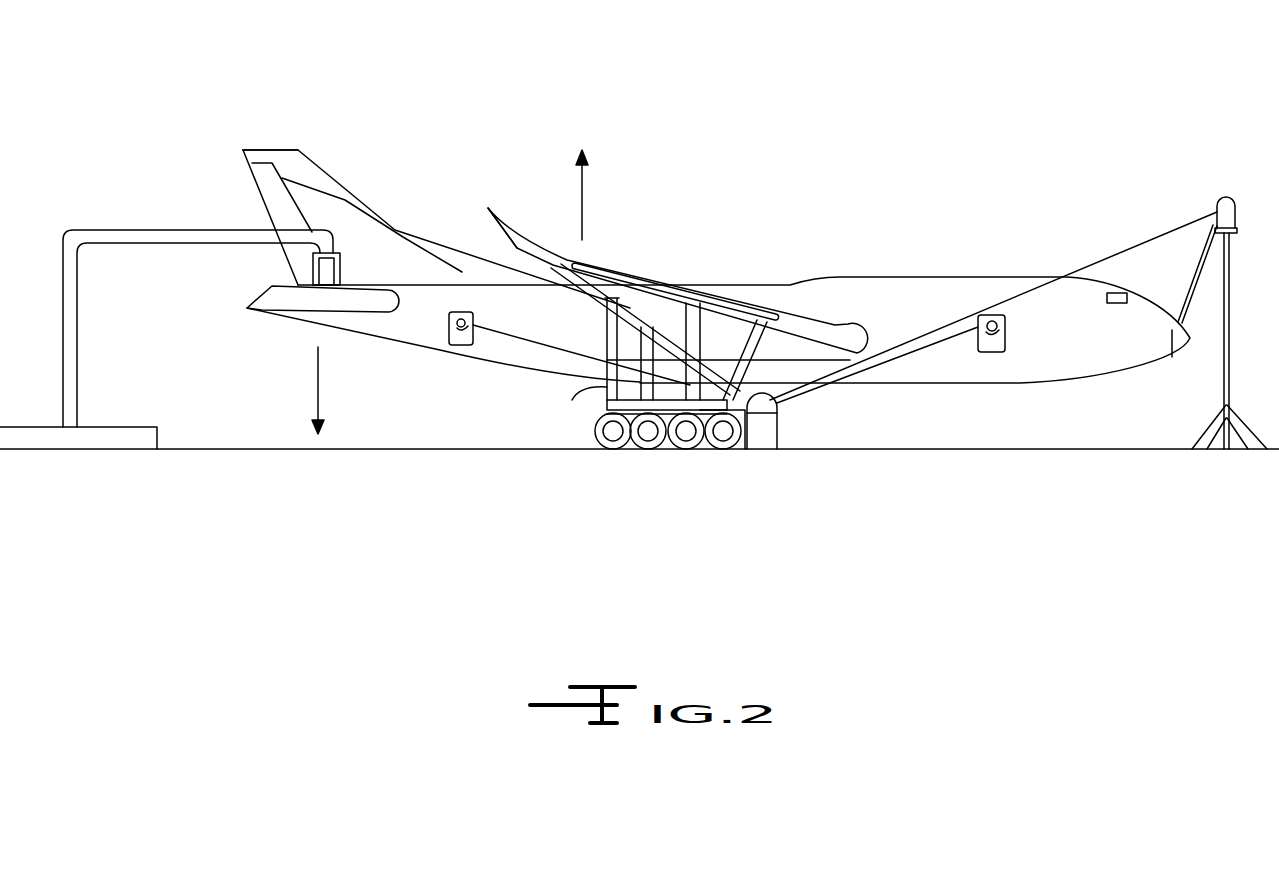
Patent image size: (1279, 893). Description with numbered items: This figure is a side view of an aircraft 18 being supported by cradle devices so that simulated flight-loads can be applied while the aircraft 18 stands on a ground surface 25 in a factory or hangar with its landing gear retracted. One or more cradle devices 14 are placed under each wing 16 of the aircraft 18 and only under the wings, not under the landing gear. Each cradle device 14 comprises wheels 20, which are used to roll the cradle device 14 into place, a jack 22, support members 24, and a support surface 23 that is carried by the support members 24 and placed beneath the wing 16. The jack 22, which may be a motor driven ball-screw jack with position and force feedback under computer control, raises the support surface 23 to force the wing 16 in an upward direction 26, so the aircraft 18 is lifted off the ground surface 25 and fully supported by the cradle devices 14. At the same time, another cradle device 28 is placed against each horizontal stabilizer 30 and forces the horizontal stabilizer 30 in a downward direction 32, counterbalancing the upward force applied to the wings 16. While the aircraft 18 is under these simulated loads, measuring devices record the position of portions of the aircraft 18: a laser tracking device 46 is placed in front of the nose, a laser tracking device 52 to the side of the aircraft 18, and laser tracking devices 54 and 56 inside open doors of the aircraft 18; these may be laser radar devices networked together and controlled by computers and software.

The cradle device 14 is at (712, 442).
The wing 16 is at (668, 287).
The aircraft 18 is at (867, 277).
The wheels 20 is at (650, 442).
The jack 22 is at (573, 400).
The support surface 23 is at (300, 300).
The support members 24 is at (775, 335).
The ground surface 25 is at (950, 447).
The upward direction 26 is at (578, 197).
The cradle device 28 is at (138, 228).
The horizontal stabilizer 30 is at (338, 270).
The downward direction 32 is at (323, 405).
The laser tracking device 46 is at (1233, 212).
The laser tracking device 52 is at (778, 440).
The laser tracking device 54 is at (1007, 340).
The laser tracking device 56 is at (468, 312).